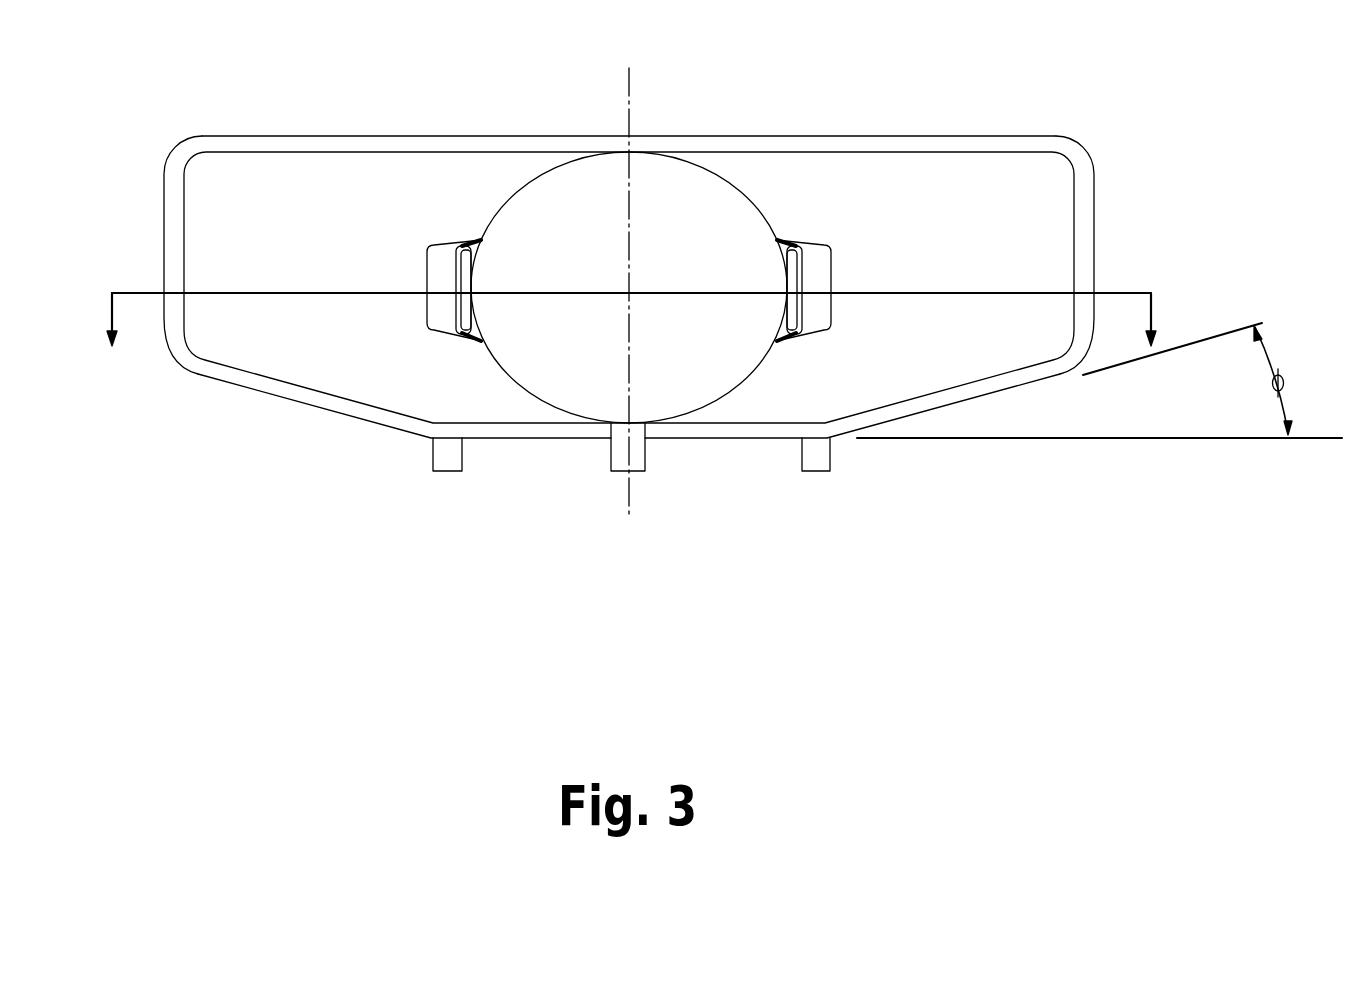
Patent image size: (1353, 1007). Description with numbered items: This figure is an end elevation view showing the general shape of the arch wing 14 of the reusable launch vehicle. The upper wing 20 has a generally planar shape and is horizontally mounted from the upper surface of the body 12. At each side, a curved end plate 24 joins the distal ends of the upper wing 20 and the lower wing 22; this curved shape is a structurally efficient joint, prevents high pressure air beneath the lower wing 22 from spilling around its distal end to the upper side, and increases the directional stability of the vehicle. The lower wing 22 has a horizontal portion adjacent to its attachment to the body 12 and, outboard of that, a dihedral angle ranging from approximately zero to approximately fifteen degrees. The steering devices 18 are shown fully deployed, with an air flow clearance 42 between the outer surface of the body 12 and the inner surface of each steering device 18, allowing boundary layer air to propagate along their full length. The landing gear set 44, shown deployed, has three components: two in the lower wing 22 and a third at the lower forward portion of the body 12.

The body 12 is at (532, 205).
The arch wing 14 is at (315, 145).
The steering device 18 is at (460, 292).
The upper wing 20 is at (1008, 135).
The lower wing 22 is at (388, 412).
The curved end plate 24 is at (1094, 240).
The air flow clearance 42 is at (472, 258).
The landing gear set 44 is at (452, 460).